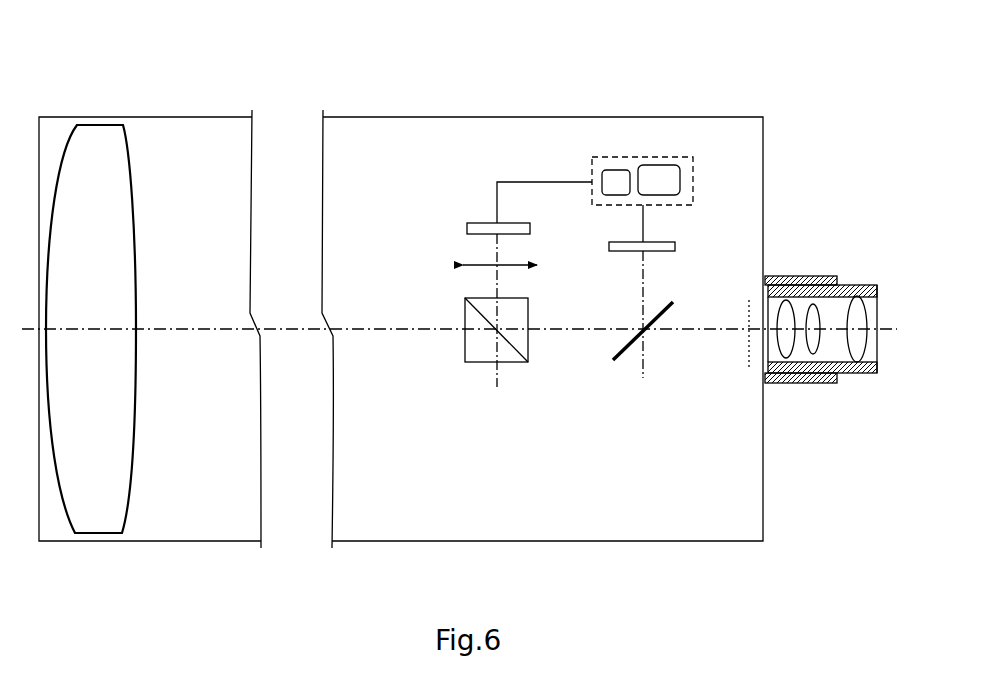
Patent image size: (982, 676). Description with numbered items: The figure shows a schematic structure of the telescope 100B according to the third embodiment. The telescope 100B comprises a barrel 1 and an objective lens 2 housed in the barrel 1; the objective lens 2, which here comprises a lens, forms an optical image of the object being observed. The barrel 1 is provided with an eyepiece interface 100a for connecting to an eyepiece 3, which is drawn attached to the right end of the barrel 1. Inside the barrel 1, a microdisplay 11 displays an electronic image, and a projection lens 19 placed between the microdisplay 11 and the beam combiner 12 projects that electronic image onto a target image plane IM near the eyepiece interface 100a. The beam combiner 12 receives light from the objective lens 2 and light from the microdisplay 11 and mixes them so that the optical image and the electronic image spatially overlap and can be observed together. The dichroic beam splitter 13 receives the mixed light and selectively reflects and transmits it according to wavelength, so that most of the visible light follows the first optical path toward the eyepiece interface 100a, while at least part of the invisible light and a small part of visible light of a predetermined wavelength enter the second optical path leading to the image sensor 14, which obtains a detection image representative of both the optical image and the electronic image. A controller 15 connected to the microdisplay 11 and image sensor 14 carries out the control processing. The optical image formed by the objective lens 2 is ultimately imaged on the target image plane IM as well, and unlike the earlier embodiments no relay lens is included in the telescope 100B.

The telescope 100B is at (160, 82).
The barrel 1 is at (387, 117).
The objective lens 2 is at (136, 408).
The microdisplay 11 is at (487, 222).
The projection lens 19 is at (467, 263).
The beam combiner 12 is at (465, 347).
The controller 15 is at (592, 173).
The image sensor 14 is at (675, 247).
The dichroic beam splitter 13 is at (628, 347).
The target image plane IM is at (749, 379).
The eyepiece interface 100a is at (800, 383).
The eyepiece 3 is at (857, 287).